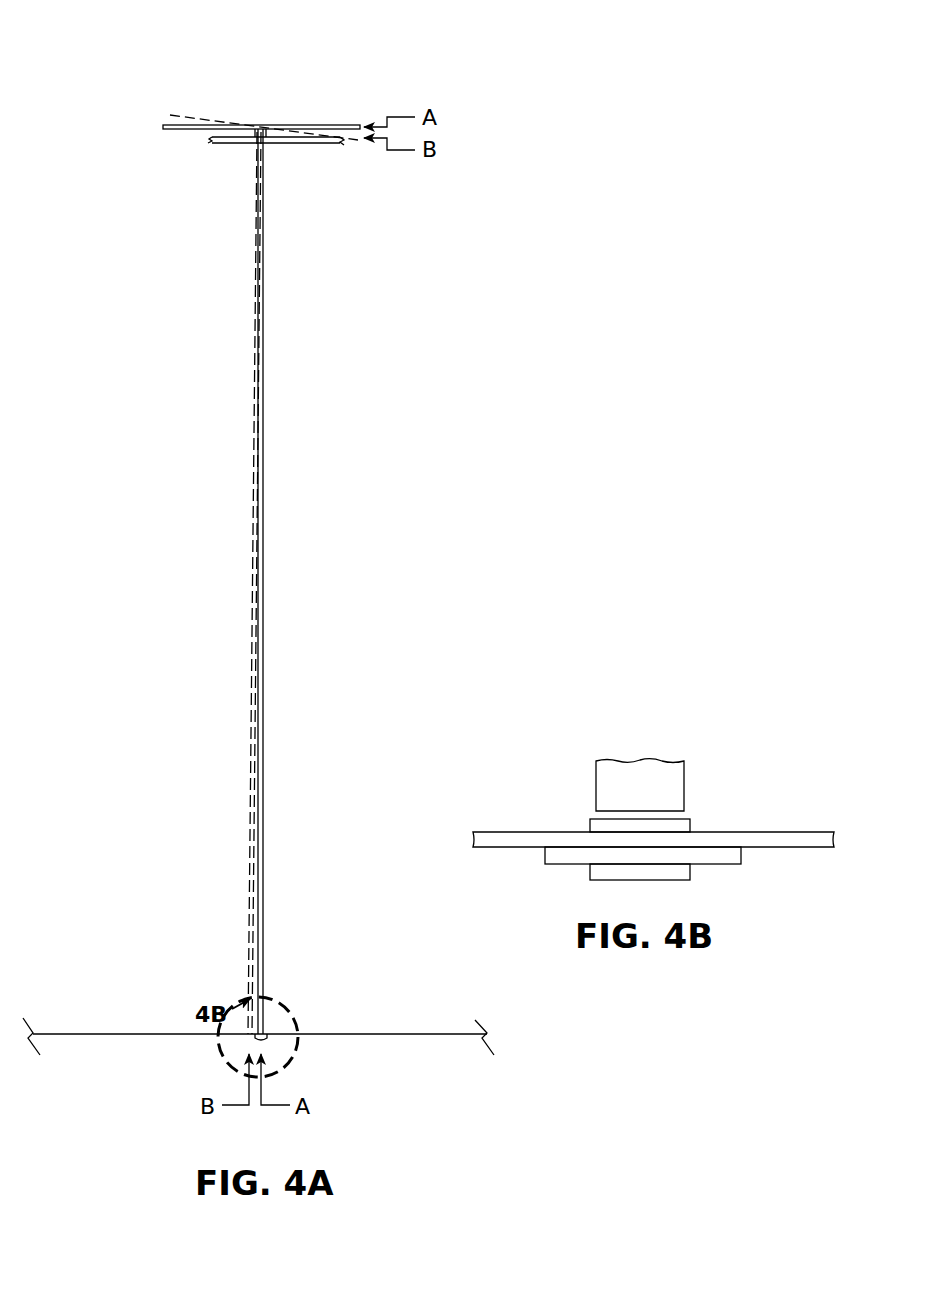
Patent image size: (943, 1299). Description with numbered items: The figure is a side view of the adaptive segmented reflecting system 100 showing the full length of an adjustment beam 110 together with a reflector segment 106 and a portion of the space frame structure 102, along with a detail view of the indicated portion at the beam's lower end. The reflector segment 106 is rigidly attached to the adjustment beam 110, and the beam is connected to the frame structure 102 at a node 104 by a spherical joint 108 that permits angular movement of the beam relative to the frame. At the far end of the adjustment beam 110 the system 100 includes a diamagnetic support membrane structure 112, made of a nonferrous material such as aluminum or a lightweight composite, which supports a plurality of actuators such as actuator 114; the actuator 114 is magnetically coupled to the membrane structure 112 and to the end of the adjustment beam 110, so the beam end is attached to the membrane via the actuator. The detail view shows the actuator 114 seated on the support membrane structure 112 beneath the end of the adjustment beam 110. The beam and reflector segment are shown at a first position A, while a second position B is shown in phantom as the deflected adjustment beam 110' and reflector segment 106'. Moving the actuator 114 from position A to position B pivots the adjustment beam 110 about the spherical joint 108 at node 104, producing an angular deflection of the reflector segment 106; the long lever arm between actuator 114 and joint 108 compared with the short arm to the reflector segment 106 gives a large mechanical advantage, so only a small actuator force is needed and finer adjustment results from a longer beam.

In FIG. 4A, the adaptive segmented reflecting system 100 is at (139, 60).
In FIG. 4A, the space frame structure 102 is at (314, 147).
In FIG. 4A, the node 104 is at (250, 156).
In FIG. 4A, the reflector segment 106 is at (224, 140).
In FIG. 4A, the reflector segment in second position 106' is at (223, 111).
In FIG. 4A, the spherical joint 108 is at (256, 146).
In FIG. 4A, the adjustment beam 110 is at (308, 581).
In FIG. 4B, the adjustment beam 110 is at (669, 765).
In FIG. 4A, the adjustment beam in second position 110' is at (204, 583).
In FIG. 4A, the diamagnetic support membrane structure 112 is at (377, 1034).
In FIG. 4B, the diamagnetic support membrane structure 112 is at (773, 832).
In FIG. 4A, the actuator 114 is at (273, 1047).
In FIG. 4B, the actuator 114 is at (711, 872).